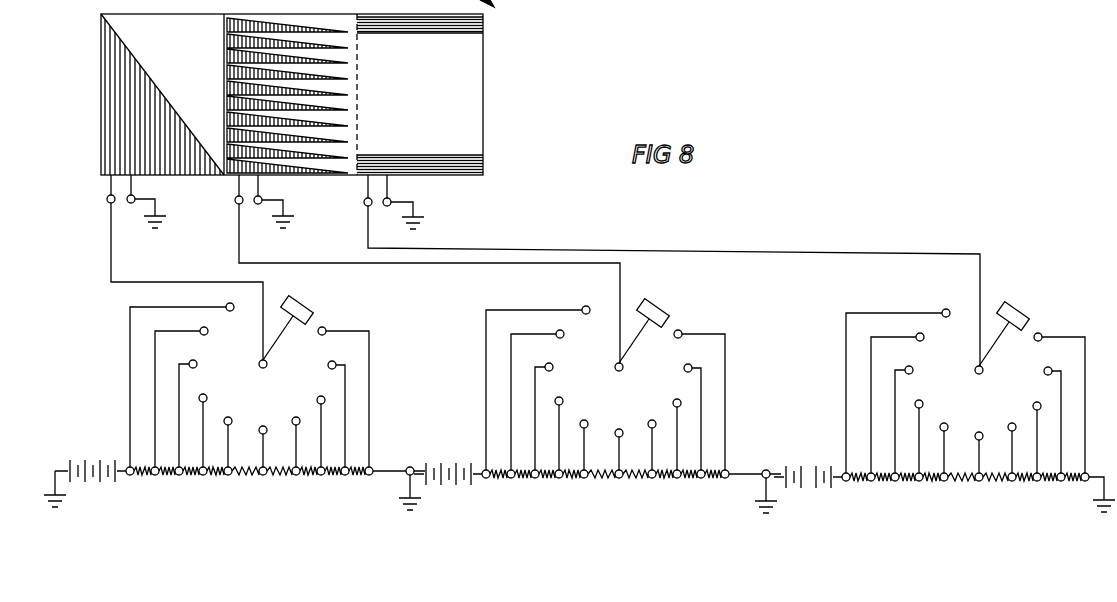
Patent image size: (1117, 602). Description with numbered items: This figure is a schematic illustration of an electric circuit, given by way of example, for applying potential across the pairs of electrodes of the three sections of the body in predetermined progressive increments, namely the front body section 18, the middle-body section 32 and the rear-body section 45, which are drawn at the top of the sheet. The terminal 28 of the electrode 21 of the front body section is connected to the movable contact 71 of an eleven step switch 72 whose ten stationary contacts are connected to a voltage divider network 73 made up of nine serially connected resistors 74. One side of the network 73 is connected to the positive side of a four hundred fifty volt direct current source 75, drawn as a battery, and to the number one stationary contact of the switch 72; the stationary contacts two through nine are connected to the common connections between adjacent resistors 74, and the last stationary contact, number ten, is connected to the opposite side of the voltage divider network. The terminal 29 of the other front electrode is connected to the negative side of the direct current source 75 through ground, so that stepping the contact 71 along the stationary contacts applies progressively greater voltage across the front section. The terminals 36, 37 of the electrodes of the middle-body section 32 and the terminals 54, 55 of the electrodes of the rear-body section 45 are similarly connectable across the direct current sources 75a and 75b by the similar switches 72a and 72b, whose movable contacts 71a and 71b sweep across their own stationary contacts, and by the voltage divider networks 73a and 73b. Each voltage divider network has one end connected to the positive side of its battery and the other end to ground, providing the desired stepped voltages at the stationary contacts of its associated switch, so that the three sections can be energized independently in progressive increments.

The front body section 18 is at (160, 14).
The electrode 21 is at (100, 118).
The middle-body section 32 is at (297, 14).
The rear-body section 45 is at (485, 78).
The terminal 28 is at (108, 202).
The terminal 29 is at (135, 198).
The terminal 36 is at (236, 202).
The terminal 37 is at (262, 198).
The terminal 54 is at (365, 205).
The terminal 55 is at (391, 200).
The contact 71 is at (303, 297).
The eleven step switch 72 is at (342, 315).
The voltage divider network 73 is at (242, 476).
The resistor 74 is at (350, 474).
The direct current source 75 is at (93, 458).
The contact 71a is at (655, 319).
The switch 72a is at (618, 369).
The voltage divider network 73a is at (605, 498).
The direct current source 75a is at (444, 450).
The contact 71b is at (1013, 320).
The switch 72b is at (976, 369).
The voltage divider network 73b is at (965, 501).
The direct current source 75b is at (805, 454).